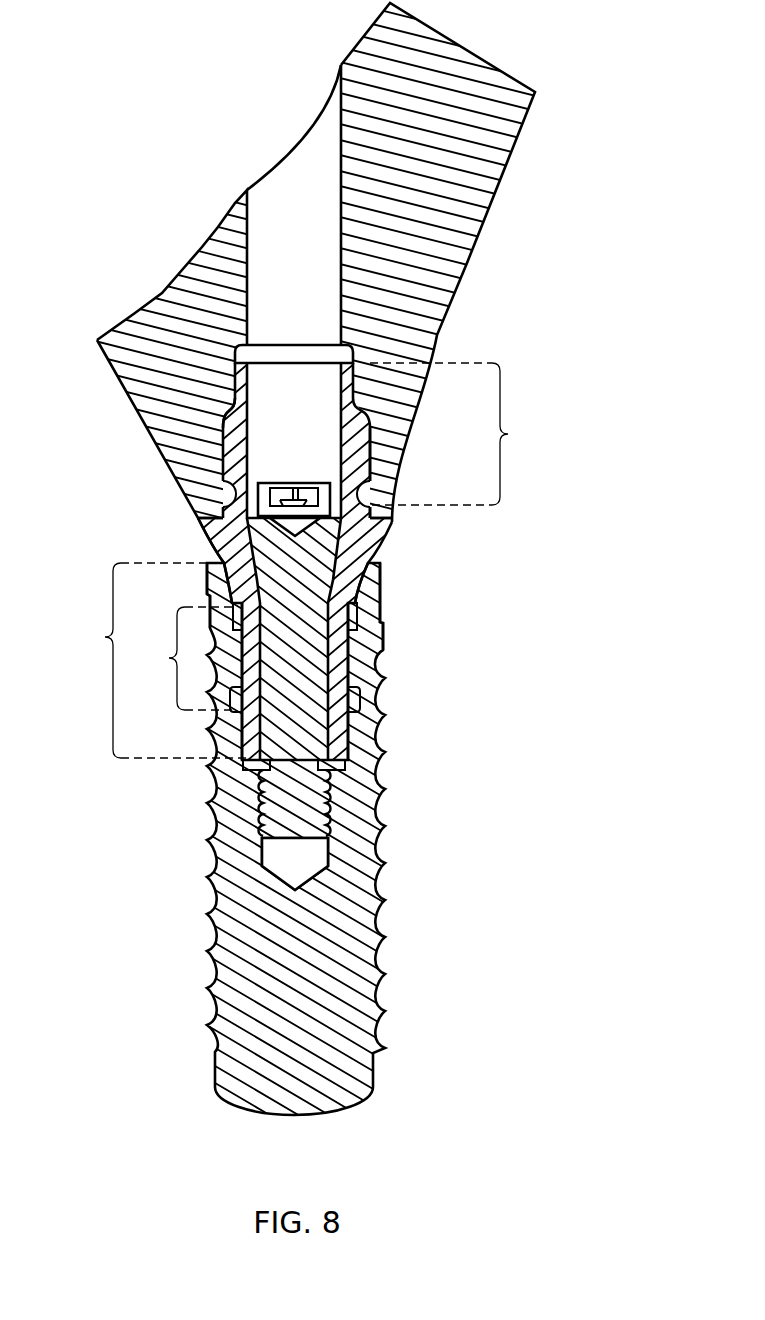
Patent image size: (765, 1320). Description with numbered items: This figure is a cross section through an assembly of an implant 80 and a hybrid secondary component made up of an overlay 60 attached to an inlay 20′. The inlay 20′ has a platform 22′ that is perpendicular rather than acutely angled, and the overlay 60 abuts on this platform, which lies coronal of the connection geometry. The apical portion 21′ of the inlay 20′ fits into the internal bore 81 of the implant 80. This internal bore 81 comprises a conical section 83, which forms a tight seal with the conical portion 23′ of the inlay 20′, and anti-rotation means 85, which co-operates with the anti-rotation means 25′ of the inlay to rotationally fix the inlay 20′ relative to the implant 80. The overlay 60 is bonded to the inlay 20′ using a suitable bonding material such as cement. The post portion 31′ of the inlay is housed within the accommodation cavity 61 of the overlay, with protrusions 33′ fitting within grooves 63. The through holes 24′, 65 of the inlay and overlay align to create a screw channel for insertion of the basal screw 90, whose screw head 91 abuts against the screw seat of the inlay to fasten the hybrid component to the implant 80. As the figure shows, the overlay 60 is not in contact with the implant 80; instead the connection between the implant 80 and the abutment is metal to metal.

The overlay 60 is at (506, 169).
The through hole 65 is at (317, 123).
The accommodation cavity 61 is at (355, 355).
The through hole 24′ is at (278, 372).
The grooves 63 is at (224, 416).
The protrusions 33′ is at (371, 457).
The post portion 31′ is at (458, 434).
The platform 22′ is at (199, 507).
The conical portion 23′ is at (222, 540).
The inlay 20′ is at (378, 548).
The basal screw 90 is at (333, 531).
The screw head 91 is at (268, 484).
The conical section 83 is at (381, 590).
The internal bore 81 is at (358, 620).
The anti-rotation means 85 is at (349, 668).
The apical portion 21′ is at (157, 660).
The anti-rotation means 25′ is at (184, 658).
The implant 80 is at (374, 846).